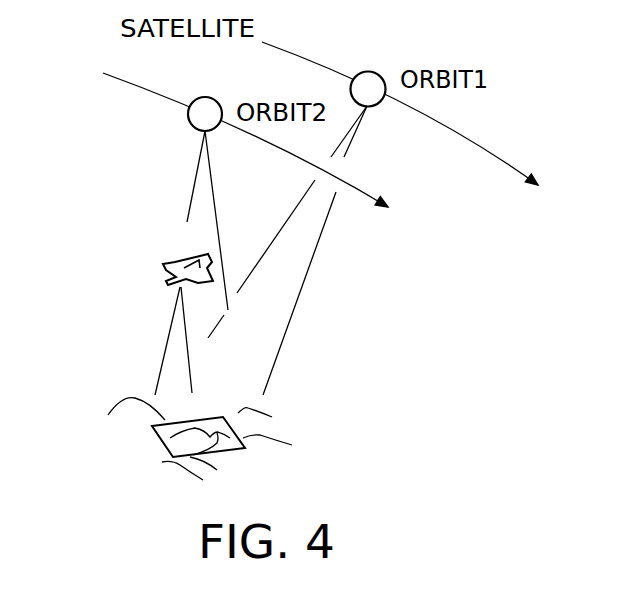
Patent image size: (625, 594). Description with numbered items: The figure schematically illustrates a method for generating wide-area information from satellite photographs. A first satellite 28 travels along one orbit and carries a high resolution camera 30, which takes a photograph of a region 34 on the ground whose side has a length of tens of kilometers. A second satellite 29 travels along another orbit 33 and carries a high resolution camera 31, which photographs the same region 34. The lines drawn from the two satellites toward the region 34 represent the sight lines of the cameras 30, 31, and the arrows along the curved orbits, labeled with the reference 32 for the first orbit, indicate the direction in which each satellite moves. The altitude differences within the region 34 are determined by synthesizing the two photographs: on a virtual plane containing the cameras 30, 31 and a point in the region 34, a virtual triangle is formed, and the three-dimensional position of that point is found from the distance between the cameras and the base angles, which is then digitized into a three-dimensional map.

The satellite 28 is at (367, 72).
The satellite 29 is at (200, 97).
The high resolution camera 30 is at (370, 106).
The high resolution camera 31 is at (200, 134).
The first orbit (ORBIT1) 32 is at (445, 123).
The orbit 33 is at (255, 135).
The region 34 is at (150, 435).